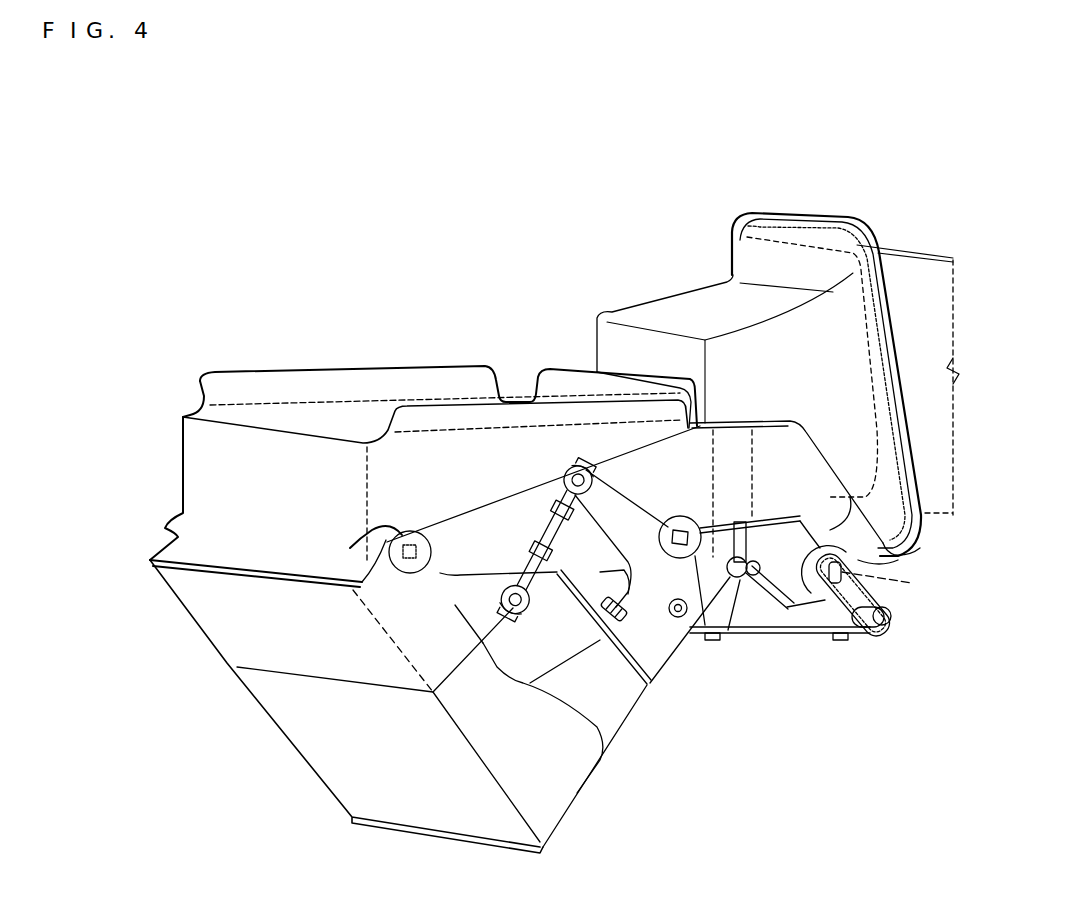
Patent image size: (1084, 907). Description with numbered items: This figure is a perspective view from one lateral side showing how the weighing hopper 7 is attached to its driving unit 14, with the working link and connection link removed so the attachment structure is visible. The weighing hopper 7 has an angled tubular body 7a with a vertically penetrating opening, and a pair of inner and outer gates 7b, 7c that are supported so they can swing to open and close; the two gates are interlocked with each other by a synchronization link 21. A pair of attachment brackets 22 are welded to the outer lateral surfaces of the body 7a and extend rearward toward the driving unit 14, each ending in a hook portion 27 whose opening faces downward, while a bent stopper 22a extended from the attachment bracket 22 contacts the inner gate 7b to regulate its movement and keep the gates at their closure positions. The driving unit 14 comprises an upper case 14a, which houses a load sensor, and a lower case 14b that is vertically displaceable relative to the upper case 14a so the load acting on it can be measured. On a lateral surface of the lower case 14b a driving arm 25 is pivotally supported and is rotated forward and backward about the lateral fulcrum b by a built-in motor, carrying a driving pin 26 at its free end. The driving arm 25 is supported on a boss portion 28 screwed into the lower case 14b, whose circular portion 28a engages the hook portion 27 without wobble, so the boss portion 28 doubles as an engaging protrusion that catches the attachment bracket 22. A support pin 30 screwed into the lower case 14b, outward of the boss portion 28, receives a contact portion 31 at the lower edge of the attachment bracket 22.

The weighing hopper 7 is at (292, 362).
The body 7a is at (200, 473).
The inner gate 7b is at (627, 703).
The outer gate 7c is at (316, 758).
The driving unit 14 is at (792, 205).
The upper case 14a is at (668, 308).
The lower case 14b is at (776, 640).
The synchronization link 21 is at (548, 544).
The attachment bracket 22 is at (804, 440).
The bent stopper 22a is at (633, 617).
The driving arm 25 is at (832, 606).
The driving pin 26 is at (868, 630).
The hook portion 27 is at (900, 553).
The boss portion 28 is at (773, 529).
The circular portion 28a is at (818, 548).
The support pin 30 is at (754, 576).
The contact portion 31 is at (746, 555).
The lateral fulcrum b is at (905, 582).